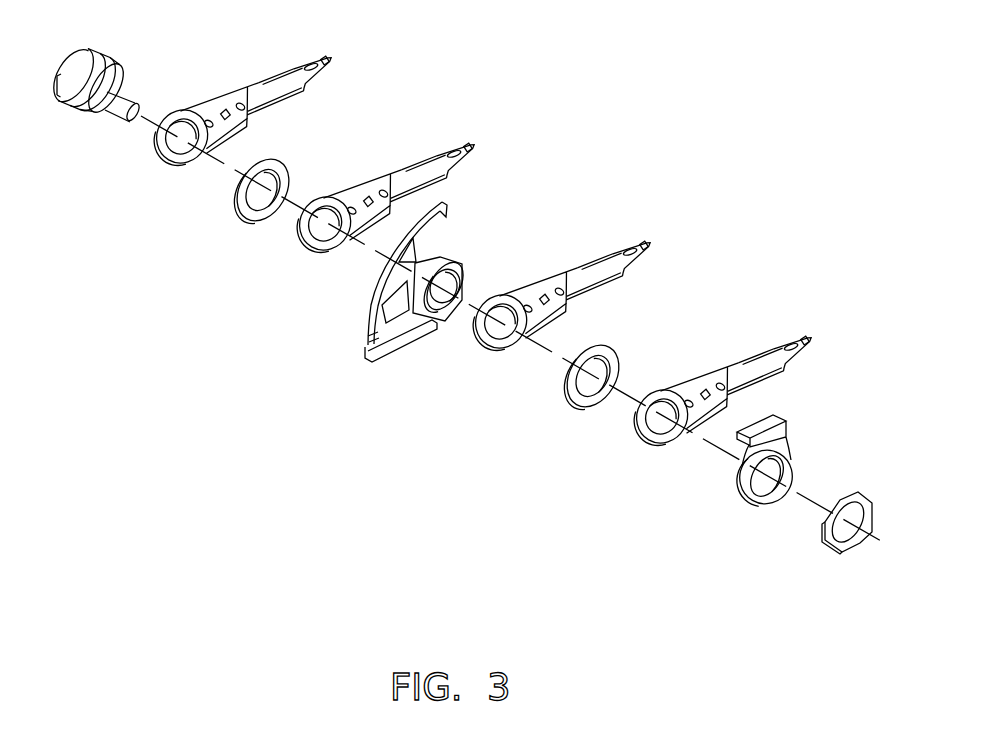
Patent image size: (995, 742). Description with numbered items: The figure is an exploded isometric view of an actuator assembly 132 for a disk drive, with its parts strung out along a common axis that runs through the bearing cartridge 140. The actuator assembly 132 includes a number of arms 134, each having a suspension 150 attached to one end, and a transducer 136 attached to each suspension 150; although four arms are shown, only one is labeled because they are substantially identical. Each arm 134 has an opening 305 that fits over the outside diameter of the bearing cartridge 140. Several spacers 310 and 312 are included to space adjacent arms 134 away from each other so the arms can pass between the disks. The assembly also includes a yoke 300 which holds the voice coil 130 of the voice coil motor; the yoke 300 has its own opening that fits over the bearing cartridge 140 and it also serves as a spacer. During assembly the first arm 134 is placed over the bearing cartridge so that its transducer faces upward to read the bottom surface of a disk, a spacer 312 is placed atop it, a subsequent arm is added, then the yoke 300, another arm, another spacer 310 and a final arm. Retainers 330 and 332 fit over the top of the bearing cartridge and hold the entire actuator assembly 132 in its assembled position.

The voice coil 130 is at (384, 300).
The actuator assembly 132 is at (214, 299).
The arm 134 is at (247, 113).
The transducer 136 is at (333, 57).
The bearing cartridge 140 is at (80, 107).
The suspension 150 is at (289, 72).
The yoke 300 is at (436, 314).
The opening 305 is at (160, 144).
The spacer 310 is at (589, 408).
The spacer 312 is at (283, 172).
The retainer 330 is at (766, 505).
The retainer 332 is at (843, 548).